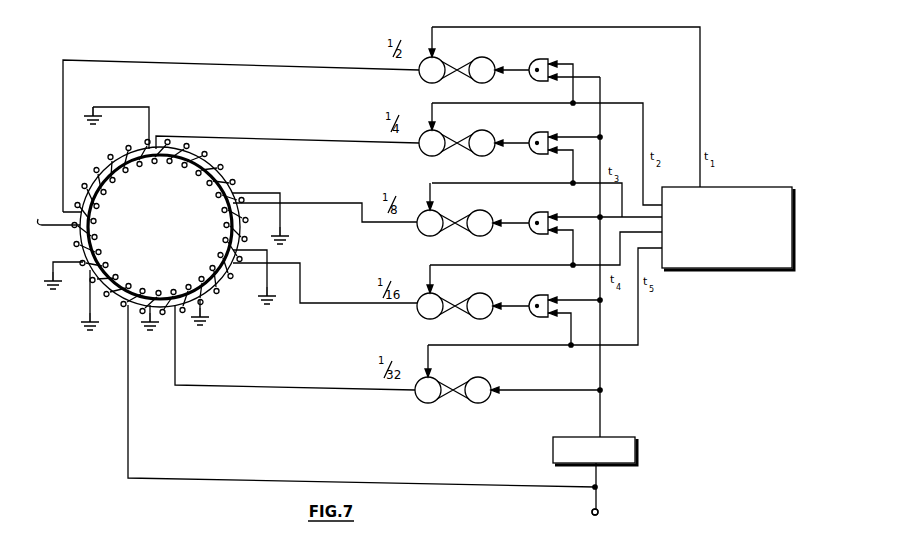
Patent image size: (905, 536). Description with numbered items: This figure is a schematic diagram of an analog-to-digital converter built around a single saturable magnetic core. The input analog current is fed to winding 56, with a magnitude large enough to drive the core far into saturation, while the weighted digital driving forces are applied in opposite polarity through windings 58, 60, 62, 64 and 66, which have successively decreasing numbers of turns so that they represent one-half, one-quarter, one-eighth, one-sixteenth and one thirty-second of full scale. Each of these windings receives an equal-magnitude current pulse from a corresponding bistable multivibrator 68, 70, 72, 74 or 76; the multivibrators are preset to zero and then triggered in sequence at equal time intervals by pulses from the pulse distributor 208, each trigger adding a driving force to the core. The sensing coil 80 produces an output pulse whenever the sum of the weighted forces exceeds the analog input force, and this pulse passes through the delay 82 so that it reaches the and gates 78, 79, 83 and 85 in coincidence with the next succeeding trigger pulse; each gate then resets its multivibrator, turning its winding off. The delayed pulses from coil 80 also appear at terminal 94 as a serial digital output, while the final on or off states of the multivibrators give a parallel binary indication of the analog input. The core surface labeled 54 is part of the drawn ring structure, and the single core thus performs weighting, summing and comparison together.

The coil winding 54 is at (226, 277).
The winding 56 is at (94, 245).
The winding 58 is at (105, 186).
The winding 60 is at (160, 158).
The winding 62 is at (222, 202).
The winding 64 is at (220, 262).
The winding 66 is at (172, 293).
The bistable multivibrator 68 is at (478, 78).
The bistable multivibrator 70 is at (479, 152).
The bistable multivibrator 72 is at (455, 221).
The bistable multivibrator 74 is at (475, 318).
The bistable multivibrator 76 is at (478, 403).
The and gate 78 is at (539, 62).
The and gate 79 is at (545, 133).
The sensing coil 80 is at (115, 282).
The delay 82 is at (623, 458).
The and gate 83 is at (546, 238).
The and gate 85 is at (546, 320).
The terminal 94 is at (598, 510).
The pulse distributor 208 is at (760, 262).